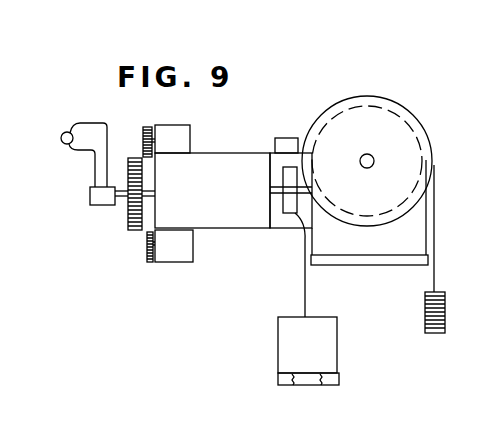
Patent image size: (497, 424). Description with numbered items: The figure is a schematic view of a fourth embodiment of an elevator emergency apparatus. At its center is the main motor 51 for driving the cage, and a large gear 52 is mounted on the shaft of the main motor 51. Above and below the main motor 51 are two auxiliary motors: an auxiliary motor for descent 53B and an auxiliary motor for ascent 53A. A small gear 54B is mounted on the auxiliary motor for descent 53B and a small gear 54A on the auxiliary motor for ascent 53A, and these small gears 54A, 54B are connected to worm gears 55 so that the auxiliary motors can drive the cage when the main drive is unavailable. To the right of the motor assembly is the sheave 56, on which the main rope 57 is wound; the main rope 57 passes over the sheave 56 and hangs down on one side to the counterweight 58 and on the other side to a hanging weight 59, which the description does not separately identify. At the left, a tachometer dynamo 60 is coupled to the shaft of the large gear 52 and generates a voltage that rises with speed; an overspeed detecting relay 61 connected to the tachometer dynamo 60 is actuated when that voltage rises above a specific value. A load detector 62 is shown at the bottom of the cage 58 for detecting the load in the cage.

The main motor 51 is at (238, 153).
The large gear 52 is at (126, 161).
The auxiliary motor for ascent 53A is at (178, 262).
The auxiliary motor for descent 53B is at (179, 125).
The small gear 54A is at (146, 263).
The small gear 54B is at (143, 129).
The worm gear 55 is at (294, 222).
The sheave 56 is at (427, 140).
The main rope 57 is at (436, 233).
The counterweight 58 is at (338, 362).
The counterweight 59 is at (446, 318).
The tachometer dynamo 60 is at (100, 206).
The overspeed detecting relay 61 is at (61, 134).
The load detector 62 is at (330, 386).